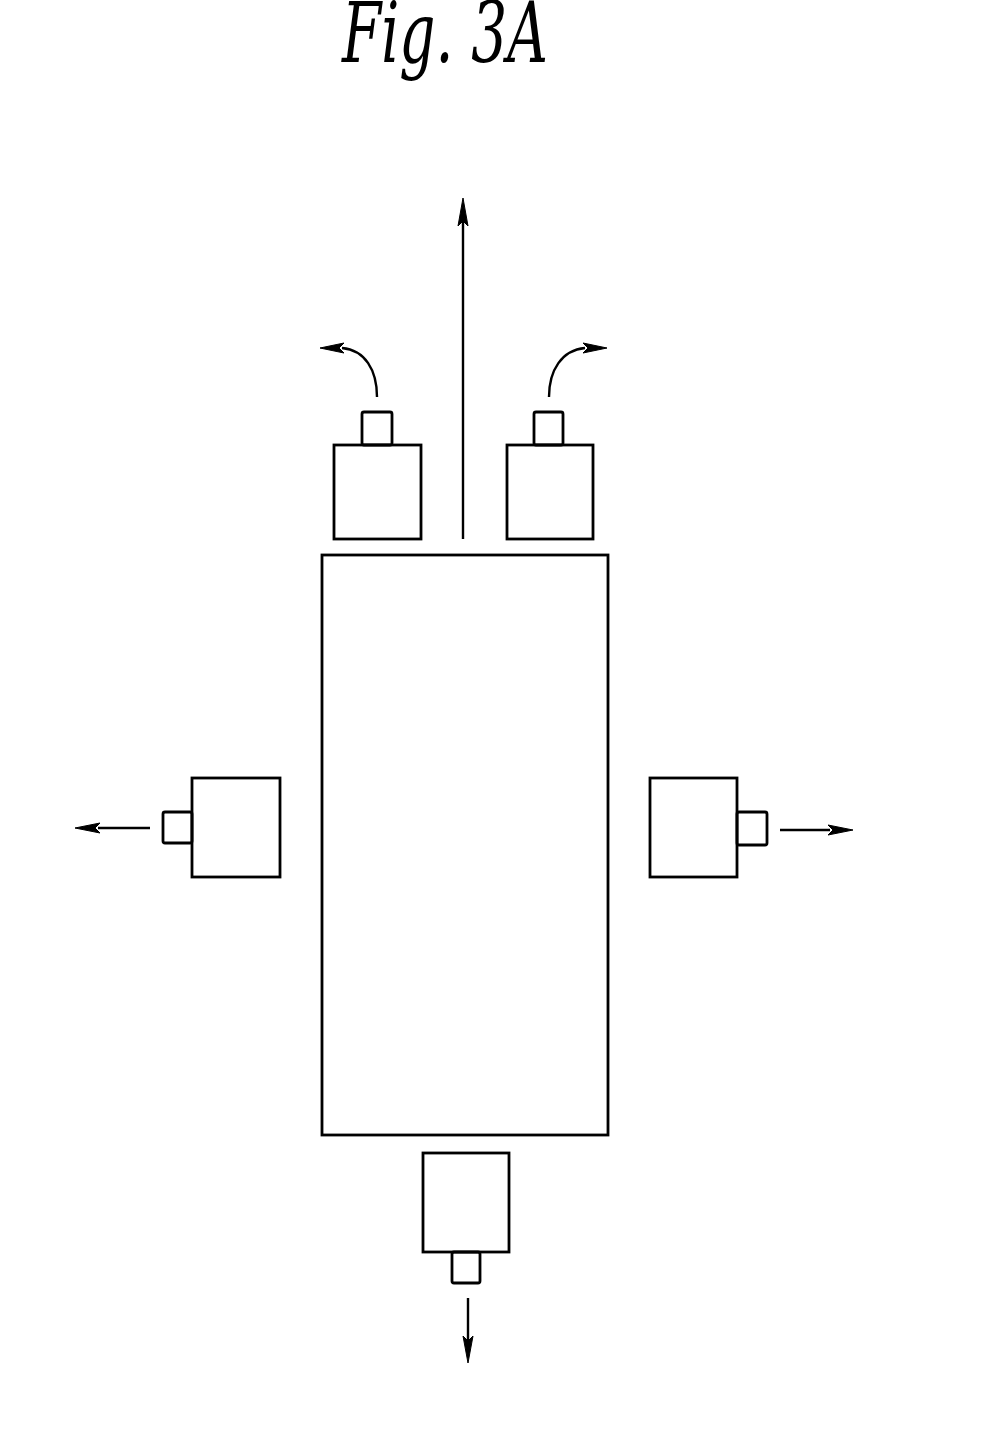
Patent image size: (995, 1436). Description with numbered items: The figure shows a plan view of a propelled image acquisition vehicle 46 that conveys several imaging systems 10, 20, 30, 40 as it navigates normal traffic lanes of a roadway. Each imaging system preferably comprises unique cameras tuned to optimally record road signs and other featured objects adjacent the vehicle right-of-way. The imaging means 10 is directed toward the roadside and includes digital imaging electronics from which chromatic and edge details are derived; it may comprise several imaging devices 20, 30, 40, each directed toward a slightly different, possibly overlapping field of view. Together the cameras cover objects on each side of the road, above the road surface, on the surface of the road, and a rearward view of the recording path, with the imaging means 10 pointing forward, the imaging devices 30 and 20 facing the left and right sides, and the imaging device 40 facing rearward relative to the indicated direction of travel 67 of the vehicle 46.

The imaging means 10 is at (334, 507).
The imaging device 20 is at (708, 877).
The imaging device 30 is at (222, 877).
The imaging device 40 is at (509, 1185).
The image acquisition vehicle 46 is at (480, 1023).
The direction of travel 67 is at (463, 298).